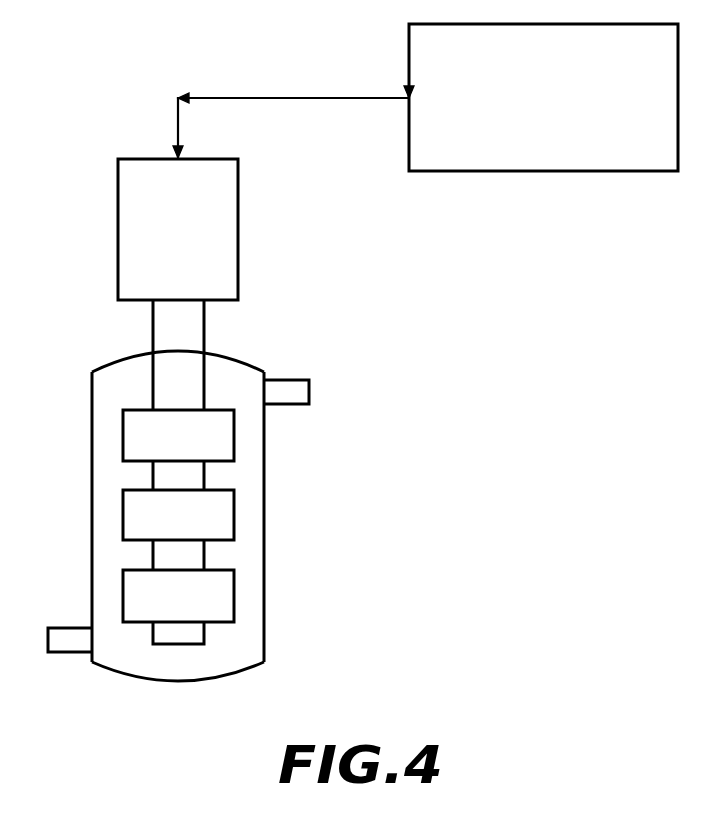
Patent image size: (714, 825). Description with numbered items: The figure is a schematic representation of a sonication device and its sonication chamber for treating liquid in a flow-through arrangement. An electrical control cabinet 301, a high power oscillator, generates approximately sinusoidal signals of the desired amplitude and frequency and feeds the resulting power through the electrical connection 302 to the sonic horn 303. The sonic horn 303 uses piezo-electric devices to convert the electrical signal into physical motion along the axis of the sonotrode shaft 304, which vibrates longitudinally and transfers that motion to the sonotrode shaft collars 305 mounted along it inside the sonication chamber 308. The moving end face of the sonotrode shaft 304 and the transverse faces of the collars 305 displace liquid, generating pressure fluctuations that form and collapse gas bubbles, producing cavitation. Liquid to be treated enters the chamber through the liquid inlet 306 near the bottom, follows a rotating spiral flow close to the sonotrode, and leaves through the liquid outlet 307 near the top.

The electrical control cabinet 301 is at (521, 107).
The electrical connection 302 is at (298, 98).
The sonic horn 303 is at (178, 240).
The sonotrode shaft 304 is at (173, 367).
The sonotrode shaft collars 305 is at (179, 530).
The liquid inlet 306 is at (66, 632).
The liquid outlet 307 is at (290, 385).
The sonication chamber 308 is at (265, 637).